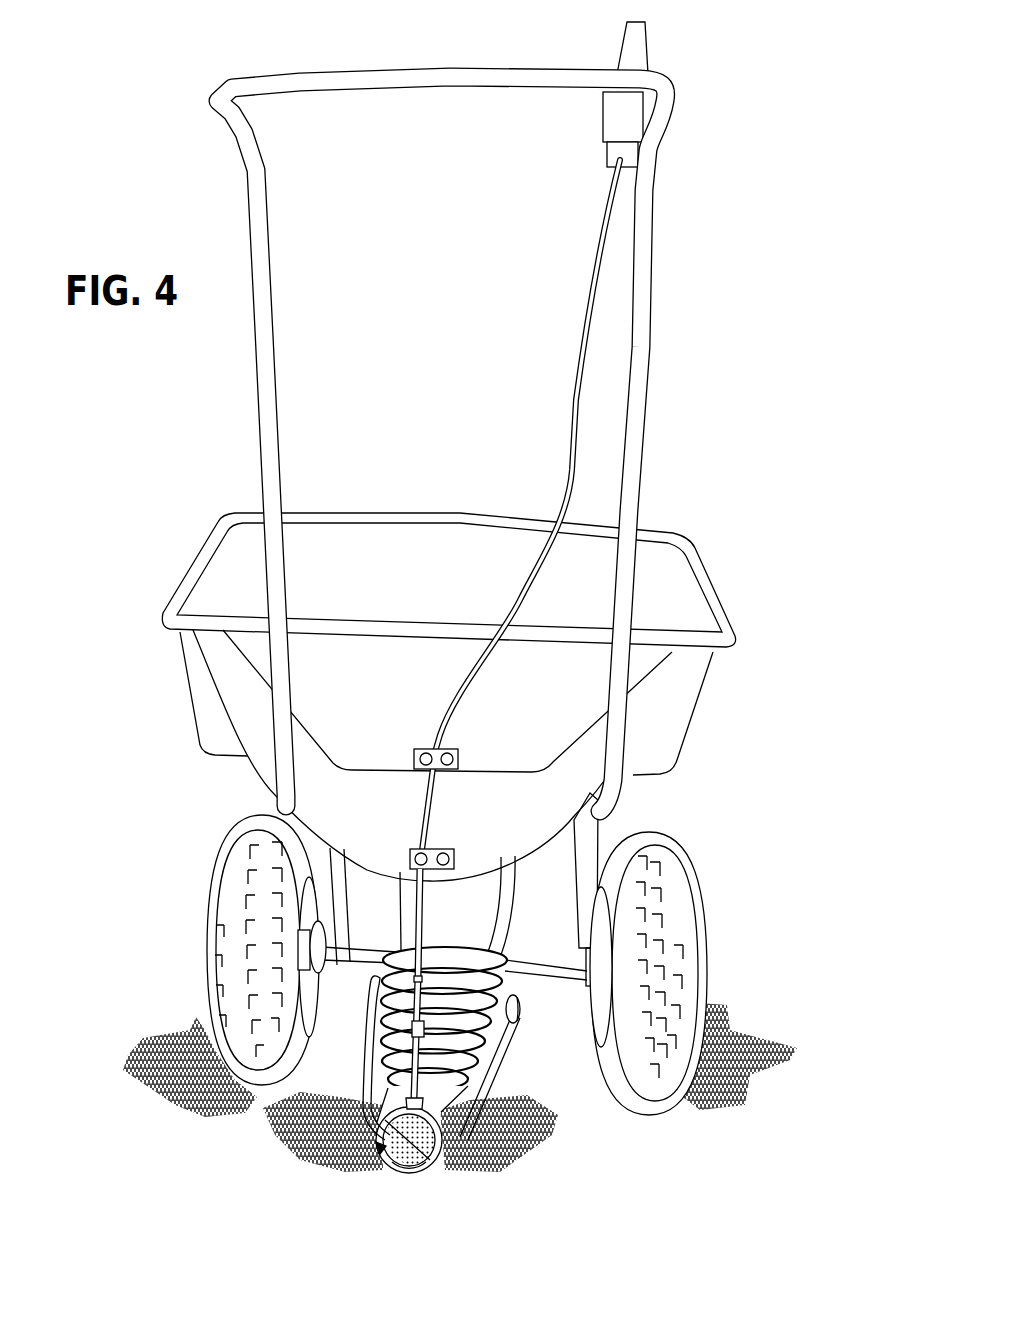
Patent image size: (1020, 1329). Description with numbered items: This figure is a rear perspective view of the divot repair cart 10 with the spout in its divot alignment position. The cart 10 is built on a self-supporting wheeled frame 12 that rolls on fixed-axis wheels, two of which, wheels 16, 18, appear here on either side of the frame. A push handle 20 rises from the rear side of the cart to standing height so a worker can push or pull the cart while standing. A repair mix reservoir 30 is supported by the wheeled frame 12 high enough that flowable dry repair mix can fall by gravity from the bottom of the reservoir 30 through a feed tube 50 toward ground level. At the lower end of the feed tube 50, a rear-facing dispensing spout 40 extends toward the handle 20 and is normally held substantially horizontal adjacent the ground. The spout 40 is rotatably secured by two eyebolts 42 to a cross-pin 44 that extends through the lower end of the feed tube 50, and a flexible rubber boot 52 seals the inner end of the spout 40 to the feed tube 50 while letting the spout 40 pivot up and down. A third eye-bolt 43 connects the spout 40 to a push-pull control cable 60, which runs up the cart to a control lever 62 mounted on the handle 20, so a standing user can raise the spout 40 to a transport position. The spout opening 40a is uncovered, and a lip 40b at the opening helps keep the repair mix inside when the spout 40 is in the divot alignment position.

The divot repair cart 10 is at (718, 242).
The self-supporting wheeled frame 12 is at (588, 840).
The wheel 16 is at (688, 958).
The wheel 18 is at (225, 937).
The push handle 20 is at (455, 75).
The repair mix reservoir 30 is at (683, 593).
The dispensing spout 40 is at (443, 1120).
The spout opening 40a is at (380, 1150).
The lip or partial obstruction 40b is at (407, 1170).
The eyebolts 42 is at (440, 1117).
The third eye-bolt 43 is at (373, 990).
The cross-pin 44 is at (520, 1010).
The feed tube 50 is at (480, 915).
The rubber boot 52 is at (475, 1042).
The control cable 60 is at (578, 338).
The control lever 62 is at (633, 50).